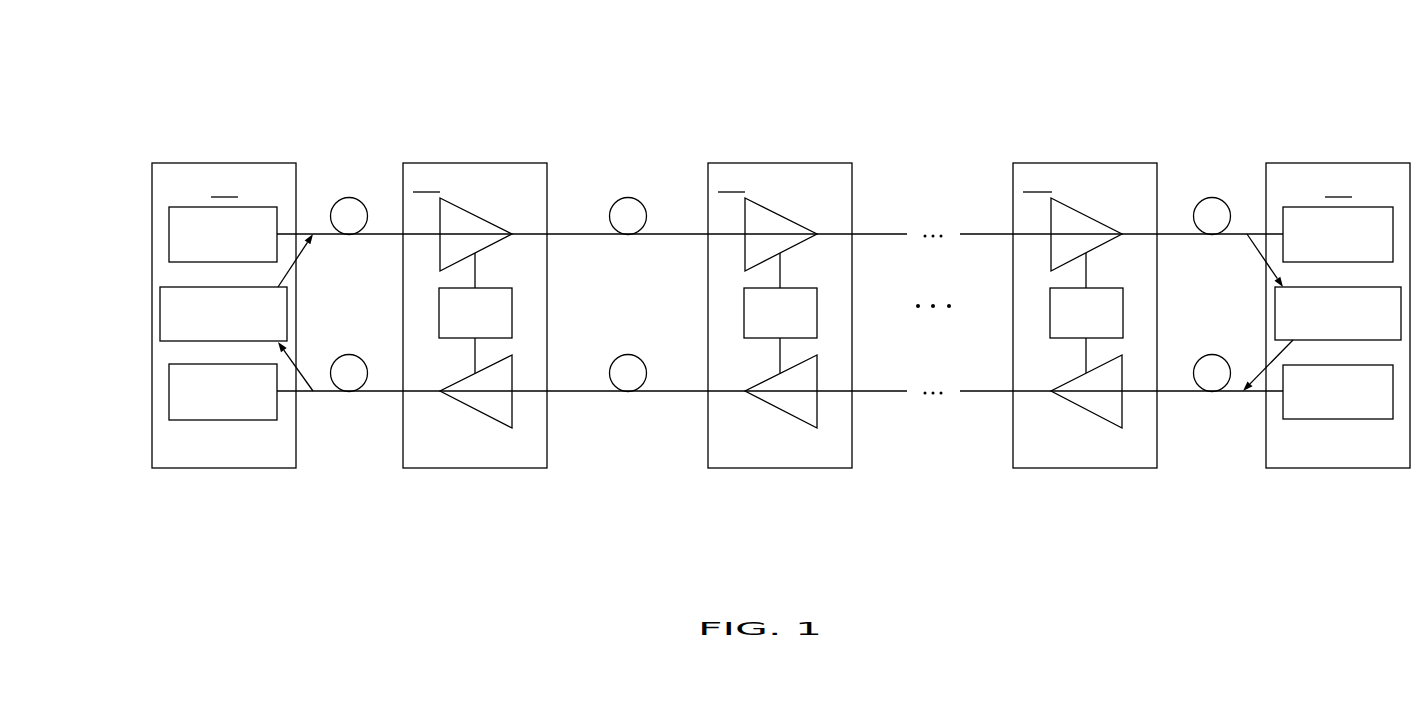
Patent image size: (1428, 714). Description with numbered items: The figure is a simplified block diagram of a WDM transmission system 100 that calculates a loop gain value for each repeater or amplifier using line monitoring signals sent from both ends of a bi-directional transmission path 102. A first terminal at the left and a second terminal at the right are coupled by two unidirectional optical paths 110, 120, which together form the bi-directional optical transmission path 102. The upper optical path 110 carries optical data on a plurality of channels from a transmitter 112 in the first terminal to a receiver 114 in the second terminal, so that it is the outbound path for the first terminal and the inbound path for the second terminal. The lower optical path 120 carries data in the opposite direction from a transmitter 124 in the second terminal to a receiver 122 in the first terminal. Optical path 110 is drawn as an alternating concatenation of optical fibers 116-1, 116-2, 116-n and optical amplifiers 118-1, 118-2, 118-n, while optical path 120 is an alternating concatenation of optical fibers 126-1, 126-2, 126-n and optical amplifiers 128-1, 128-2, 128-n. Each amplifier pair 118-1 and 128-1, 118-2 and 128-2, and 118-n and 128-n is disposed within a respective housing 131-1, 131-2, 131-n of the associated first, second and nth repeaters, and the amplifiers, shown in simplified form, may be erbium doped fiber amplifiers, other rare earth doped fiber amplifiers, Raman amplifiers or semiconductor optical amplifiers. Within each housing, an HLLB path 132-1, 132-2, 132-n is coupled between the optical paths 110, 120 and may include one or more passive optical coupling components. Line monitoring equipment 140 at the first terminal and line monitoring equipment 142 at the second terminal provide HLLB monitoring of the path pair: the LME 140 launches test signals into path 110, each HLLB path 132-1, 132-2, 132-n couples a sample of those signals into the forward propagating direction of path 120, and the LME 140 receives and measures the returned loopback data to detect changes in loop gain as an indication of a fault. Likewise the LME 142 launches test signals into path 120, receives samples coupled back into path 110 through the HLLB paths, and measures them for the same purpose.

The WDM transmission system 100 is at (704, 71).
The bi-directional optical transmission path 102 is at (874, 506).
The optical path 110 is at (620, 176).
The optical path 120 is at (602, 447).
The transmitter 112 is at (239, 256).
The receiver 122 is at (239, 414).
The line monitoring equipment 140 is at (239, 336).
The receiver 114 is at (1354, 256).
The transmitter 124 is at (1354, 414).
The line monitoring equipment 142 is at (1354, 336).
The optical fiber 116-1 is at (334, 237).
The optical fiber 116-2 is at (562, 238).
The optical fiber 116-n is at (1169, 238).
The optical fiber 126-1 is at (331, 395).
The optical fiber 126-2 is at (573, 396).
The optical fiber 126-n is at (1176, 396).
The housing 131-1 is at (493, 162).
The housing 131-2 is at (798, 162).
The housing 131-n is at (1106, 162).
The optical amplifier 118-1 is at (489, 244).
The optical amplifier 118-2 is at (794, 244).
The optical amplifier 118-n is at (1100, 244).
The optical amplifier 128-1 is at (507, 402).
The optical amplifier 128-2 is at (812, 402).
The optical amplifier 128-n is at (1118, 402).
The HLLB path 132-1 is at (498, 327).
The HLLB path 132-2 is at (803, 327).
The HLLB path 132-n is at (1109, 327).